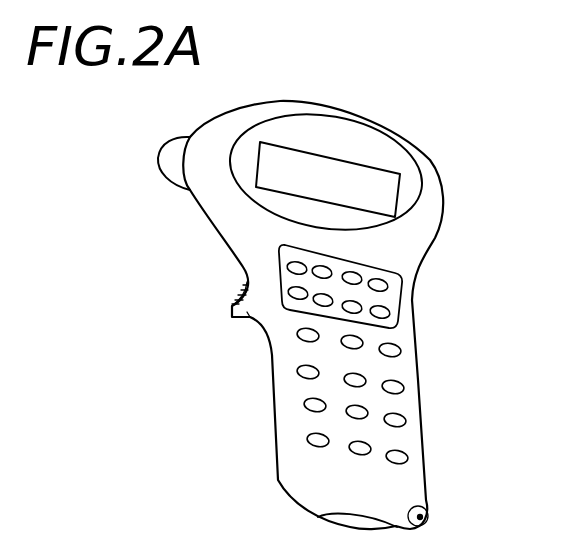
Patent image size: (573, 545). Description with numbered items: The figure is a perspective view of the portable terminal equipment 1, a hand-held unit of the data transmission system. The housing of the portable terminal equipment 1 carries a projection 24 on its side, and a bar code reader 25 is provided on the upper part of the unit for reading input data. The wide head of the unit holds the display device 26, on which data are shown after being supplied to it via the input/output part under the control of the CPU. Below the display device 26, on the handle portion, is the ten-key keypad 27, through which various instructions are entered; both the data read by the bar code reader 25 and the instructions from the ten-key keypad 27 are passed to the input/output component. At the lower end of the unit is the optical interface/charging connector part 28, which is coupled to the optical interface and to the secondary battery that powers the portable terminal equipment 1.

The portable terminal equipment 1 is at (421, 330).
The projection 24 is at (247, 320).
The bar code reader 25 is at (173, 162).
The display device 26 is at (368, 177).
The ten-key keypad 27 is at (298, 338).
The optical interface/charging connector part 28 is at (347, 525).